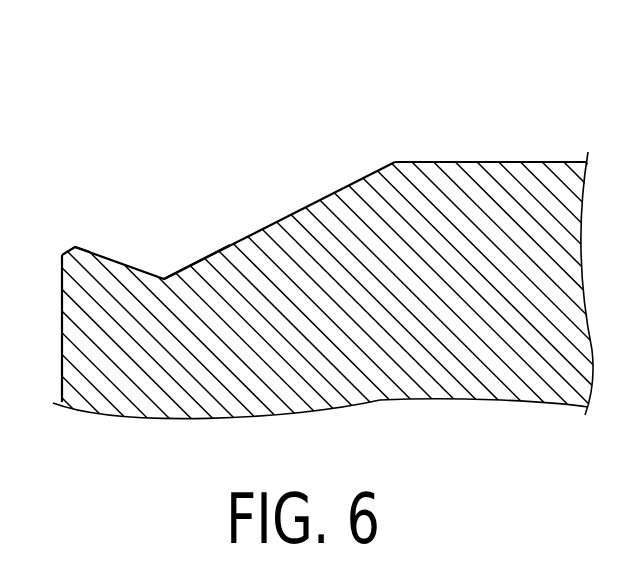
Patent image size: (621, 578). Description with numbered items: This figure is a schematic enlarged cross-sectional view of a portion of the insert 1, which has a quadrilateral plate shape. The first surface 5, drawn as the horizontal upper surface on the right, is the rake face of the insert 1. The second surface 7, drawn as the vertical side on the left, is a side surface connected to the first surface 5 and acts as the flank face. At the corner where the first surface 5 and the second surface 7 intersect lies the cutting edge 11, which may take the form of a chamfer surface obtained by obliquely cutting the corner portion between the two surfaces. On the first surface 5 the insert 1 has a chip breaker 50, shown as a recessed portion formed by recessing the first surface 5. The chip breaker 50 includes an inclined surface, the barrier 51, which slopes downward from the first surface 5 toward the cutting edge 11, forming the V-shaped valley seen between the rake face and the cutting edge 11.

The insert 1 is at (553, 67).
The first surface 5 is at (498, 162).
The second surface 7 is at (62, 330).
The cutting edge 11 is at (73, 249).
The chip breaker 50 is at (192, 202).
The barrier 51 is at (286, 217).